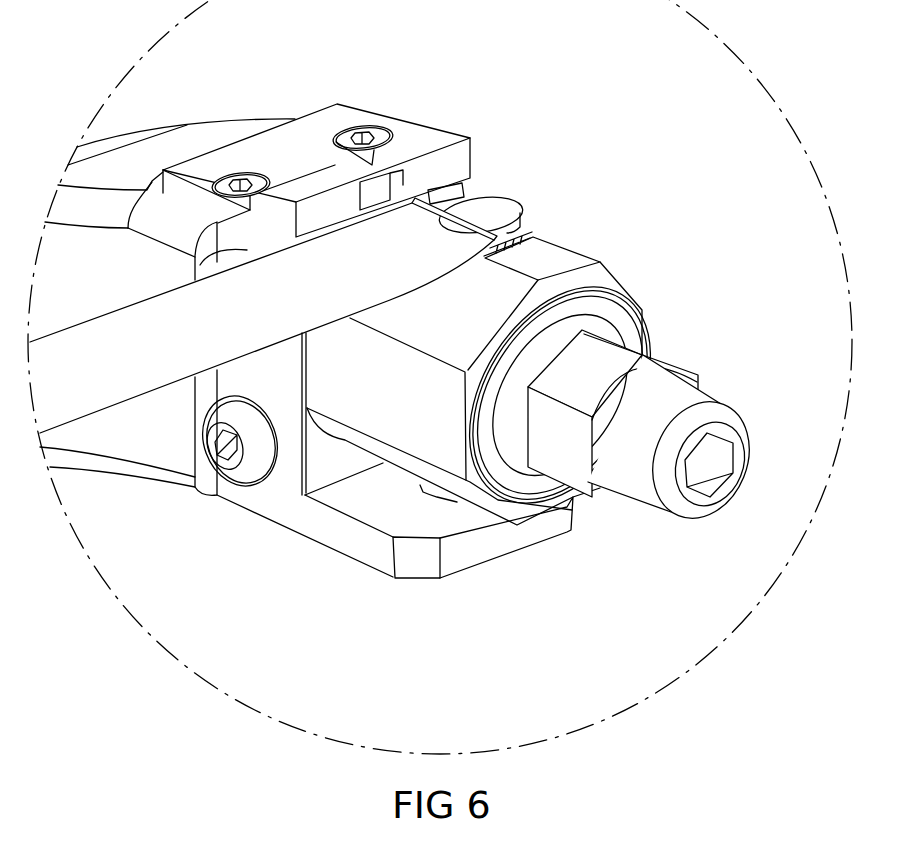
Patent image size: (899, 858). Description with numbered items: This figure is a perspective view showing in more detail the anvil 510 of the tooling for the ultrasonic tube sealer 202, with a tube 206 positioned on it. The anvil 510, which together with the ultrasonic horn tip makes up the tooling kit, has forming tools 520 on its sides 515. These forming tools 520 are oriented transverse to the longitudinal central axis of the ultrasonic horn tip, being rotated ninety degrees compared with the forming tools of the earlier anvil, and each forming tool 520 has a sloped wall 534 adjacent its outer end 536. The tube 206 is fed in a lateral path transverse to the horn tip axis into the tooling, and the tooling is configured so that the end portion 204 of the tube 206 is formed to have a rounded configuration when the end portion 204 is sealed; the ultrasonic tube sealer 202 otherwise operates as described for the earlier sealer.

The ultrasonic tube sealer 202 is at (465, 108).
The end portion 204 is at (497, 210).
The tube 206 is at (90, 395).
The anvil 510 is at (640, 300).
The sides 515 is at (560, 246).
The forming tools 520 is at (557, 255).
The sloped wall 534 is at (617, 297).
The outer end 536 is at (517, 240).